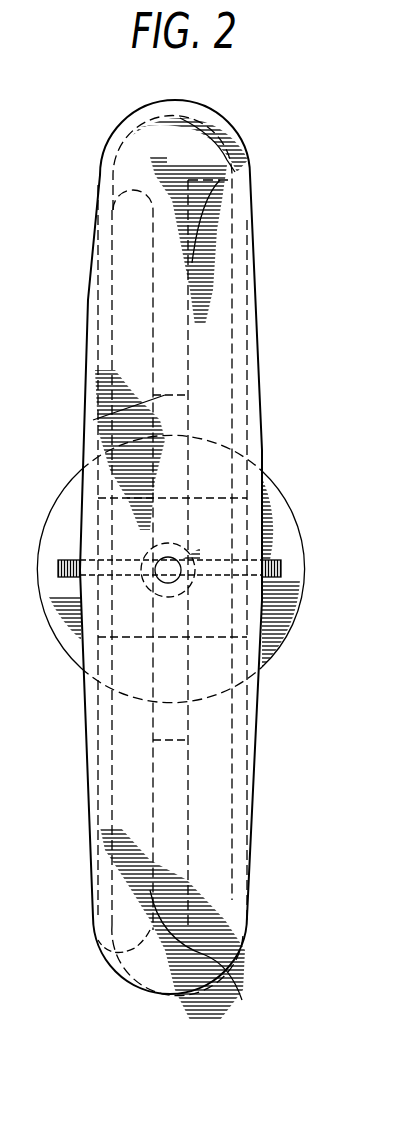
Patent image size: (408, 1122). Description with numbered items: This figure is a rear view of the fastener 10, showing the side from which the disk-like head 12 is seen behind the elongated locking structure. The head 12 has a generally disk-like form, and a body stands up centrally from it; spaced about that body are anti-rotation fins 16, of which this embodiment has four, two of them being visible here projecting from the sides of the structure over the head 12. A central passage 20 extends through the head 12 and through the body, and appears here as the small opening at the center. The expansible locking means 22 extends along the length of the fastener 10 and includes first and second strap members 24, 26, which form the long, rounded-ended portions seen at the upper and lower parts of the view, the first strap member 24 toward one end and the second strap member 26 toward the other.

The fastener 10 is at (260, 151).
The head 12 is at (298, 520).
The anti-rotation fins 16 is at (62, 560).
The central passage 20 is at (172, 566).
The locking means 22 is at (104, 160).
The first strap member 24 is at (181, 314).
The second strap member 26 is at (152, 976).